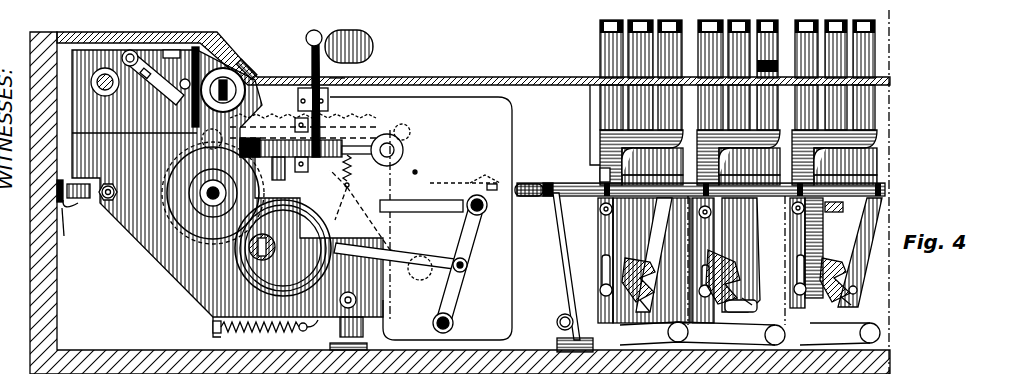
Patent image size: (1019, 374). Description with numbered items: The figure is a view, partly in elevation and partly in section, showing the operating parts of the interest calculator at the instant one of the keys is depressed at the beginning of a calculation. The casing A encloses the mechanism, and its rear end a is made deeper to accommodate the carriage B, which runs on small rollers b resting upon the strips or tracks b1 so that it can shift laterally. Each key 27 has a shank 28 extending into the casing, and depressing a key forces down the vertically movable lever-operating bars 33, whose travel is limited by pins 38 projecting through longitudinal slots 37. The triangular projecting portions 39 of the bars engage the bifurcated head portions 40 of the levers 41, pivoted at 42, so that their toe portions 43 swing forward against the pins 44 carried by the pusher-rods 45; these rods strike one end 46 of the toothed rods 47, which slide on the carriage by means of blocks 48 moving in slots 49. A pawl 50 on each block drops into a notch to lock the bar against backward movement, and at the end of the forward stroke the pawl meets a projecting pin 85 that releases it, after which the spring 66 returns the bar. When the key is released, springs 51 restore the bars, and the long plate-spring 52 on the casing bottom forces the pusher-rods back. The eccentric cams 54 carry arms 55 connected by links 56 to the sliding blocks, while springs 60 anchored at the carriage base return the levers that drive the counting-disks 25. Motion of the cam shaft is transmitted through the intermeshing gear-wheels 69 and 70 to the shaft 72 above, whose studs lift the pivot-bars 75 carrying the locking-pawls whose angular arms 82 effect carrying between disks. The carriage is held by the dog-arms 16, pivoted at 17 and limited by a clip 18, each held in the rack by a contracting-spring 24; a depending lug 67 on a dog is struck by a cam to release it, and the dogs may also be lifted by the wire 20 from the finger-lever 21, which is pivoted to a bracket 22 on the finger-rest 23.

The shaft 72 is at (92, 86).
The pivot-bar 75 is at (136, 52).
The rear end of casing a is at (166, 33).
The angular arm of locking-pawl 82 is at (209, 55).
The finger-lever 21 is at (308, 36).
The finger-rest 23 is at (373, 44).
The bracket 22 is at (347, 80).
The counting-disks 25 is at (261, 76).
The clip 18 is at (291, 128).
The wire 20 is at (326, 130).
The dog-arms 16 is at (357, 157).
The pivot of dog-arms 17 is at (392, 148).
The projecting pin 85 is at (415, 172).
The toothed rods 47 is at (443, 182).
The pawl 50 is at (476, 180).
The sliding blocks 48 is at (512, 183).
The slots 49 is at (428, 212).
The link 56 is at (467, 282).
The cam arm 55 is at (418, 276).
The spring 66 is at (470, 264).
The depending lug 67 is at (288, 170).
The contracting-spring 24 is at (361, 171).
The gear-wheel 70 is at (127, 193).
The gear-wheel 69 is at (172, 204).
The rollers b is at (78, 205).
The tracks b1 is at (70, 233).
The carriage B is at (227, 183).
The eccentric cams 54 is at (240, 282).
The springs 60 is at (265, 336).
The keys 27 is at (600, 52).
The key shanks 28 is at (877, 108).
The lever-operating bars 33 is at (600, 135).
The slots 37 is at (596, 174).
The casing A is at (563, 86).
The pins 44 is at (883, 181).
The plate-spring 52 is at (567, 278).
The notched slide-bar 46 is at (537, 197).
The pusher-rods 45 is at (575, 200).
The pins 38 is at (605, 214).
The triangular projecting portions 39 is at (605, 268).
The toe portions 43 is at (758, 222).
The levers 41 is at (662, 245).
The lever pivot 42 is at (856, 288).
The bifurcated head portions 40 is at (745, 295).
The springs 51 is at (846, 321).